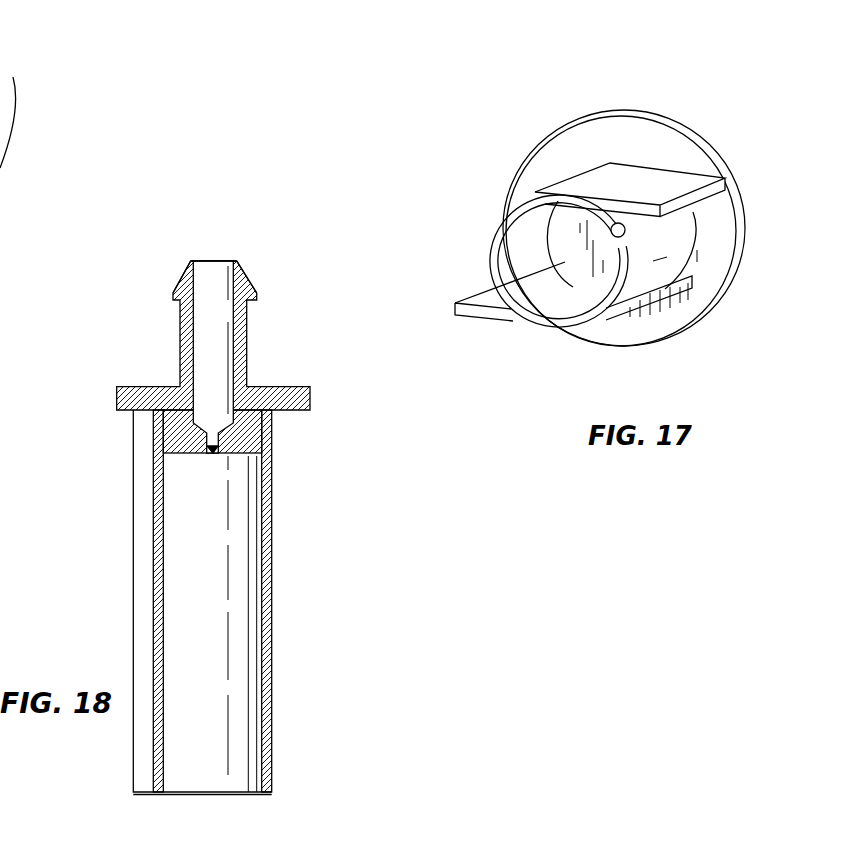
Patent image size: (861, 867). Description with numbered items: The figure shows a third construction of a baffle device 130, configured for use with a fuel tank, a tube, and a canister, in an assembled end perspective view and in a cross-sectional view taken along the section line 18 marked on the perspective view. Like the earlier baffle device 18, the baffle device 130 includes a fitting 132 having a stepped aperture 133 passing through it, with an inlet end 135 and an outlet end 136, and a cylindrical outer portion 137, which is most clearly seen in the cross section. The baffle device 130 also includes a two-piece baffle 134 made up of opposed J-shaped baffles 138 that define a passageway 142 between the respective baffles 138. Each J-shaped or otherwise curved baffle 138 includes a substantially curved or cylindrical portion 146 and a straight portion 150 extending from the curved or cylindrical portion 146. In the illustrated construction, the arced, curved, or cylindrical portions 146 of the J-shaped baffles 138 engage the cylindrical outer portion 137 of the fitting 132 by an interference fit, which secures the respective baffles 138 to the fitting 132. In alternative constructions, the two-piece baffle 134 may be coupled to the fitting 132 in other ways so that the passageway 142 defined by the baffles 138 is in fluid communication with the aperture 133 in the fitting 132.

In FIG. 18, the baffle device 130 is at (357, 512).
In FIG. 17, the baffle device 130 is at (733, 115).
In FIG. 18, the fitting 132 is at (262, 390).
In FIG. 17, the fitting 132 is at (744, 220).
In FIG. 18, the stepped aperture 133 is at (233, 350).
In FIG. 18, the two-piece baffle 134 is at (322, 744).
In FIG. 17, the two-piece baffle 134 is at (537, 339).
In FIG. 18, the inlet end 135 is at (214, 455).
In FIG. 17, the inlet end 135 is at (609, 223).
In FIG. 18, the outlet end 136 is at (197, 270).
In FIG. 18, the cylindrical outer portion 137 is at (270, 432).
In FIG. 18, the J-shaped baffle 138 is at (153, 606).
In FIG. 17, the J-shaped baffle 138 is at (537, 192).
In FIG. 18, the passageway 142 is at (238, 627).
In FIG. 17, the passageway 142 is at (563, 281).
In FIG. 17, the curved or cylindrical portion 146 is at (495, 254).
In FIG. 17, the straight portion 150 is at (630, 203).
In FIG. 17, the baffle device 18 is at (460, 238).